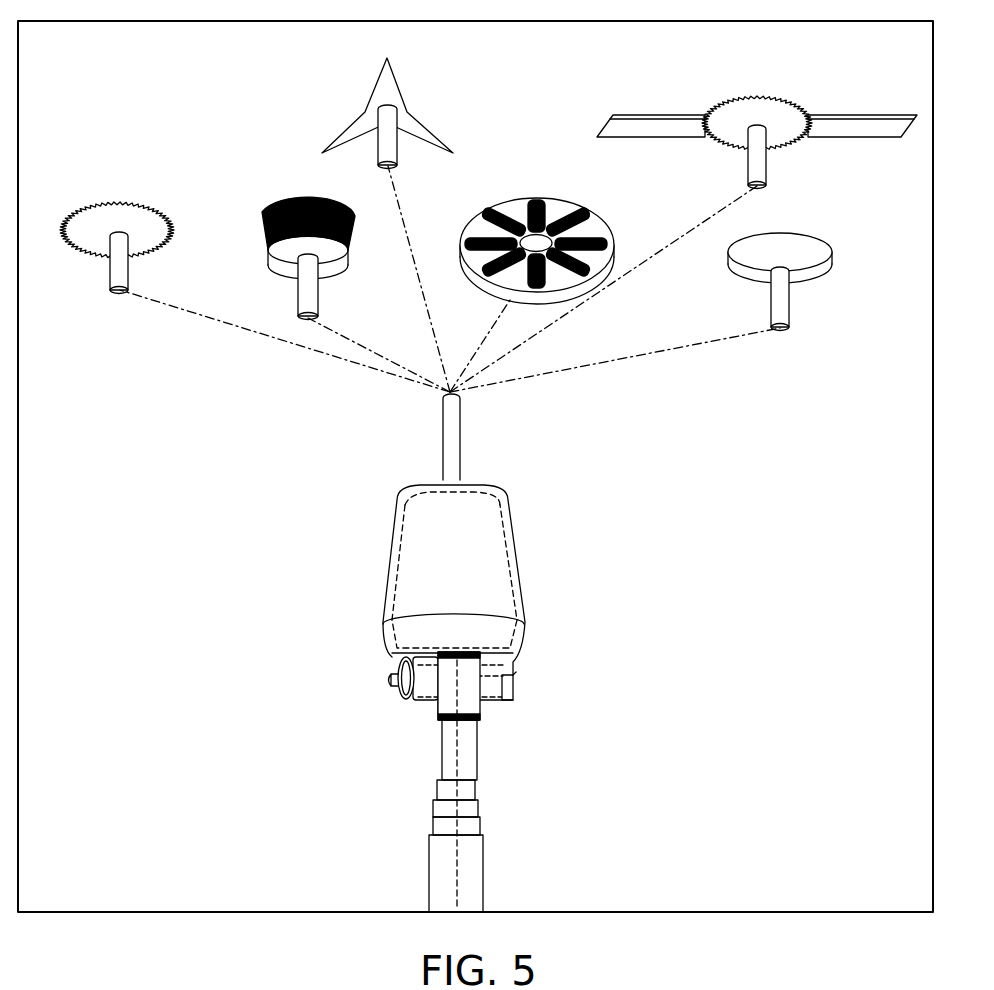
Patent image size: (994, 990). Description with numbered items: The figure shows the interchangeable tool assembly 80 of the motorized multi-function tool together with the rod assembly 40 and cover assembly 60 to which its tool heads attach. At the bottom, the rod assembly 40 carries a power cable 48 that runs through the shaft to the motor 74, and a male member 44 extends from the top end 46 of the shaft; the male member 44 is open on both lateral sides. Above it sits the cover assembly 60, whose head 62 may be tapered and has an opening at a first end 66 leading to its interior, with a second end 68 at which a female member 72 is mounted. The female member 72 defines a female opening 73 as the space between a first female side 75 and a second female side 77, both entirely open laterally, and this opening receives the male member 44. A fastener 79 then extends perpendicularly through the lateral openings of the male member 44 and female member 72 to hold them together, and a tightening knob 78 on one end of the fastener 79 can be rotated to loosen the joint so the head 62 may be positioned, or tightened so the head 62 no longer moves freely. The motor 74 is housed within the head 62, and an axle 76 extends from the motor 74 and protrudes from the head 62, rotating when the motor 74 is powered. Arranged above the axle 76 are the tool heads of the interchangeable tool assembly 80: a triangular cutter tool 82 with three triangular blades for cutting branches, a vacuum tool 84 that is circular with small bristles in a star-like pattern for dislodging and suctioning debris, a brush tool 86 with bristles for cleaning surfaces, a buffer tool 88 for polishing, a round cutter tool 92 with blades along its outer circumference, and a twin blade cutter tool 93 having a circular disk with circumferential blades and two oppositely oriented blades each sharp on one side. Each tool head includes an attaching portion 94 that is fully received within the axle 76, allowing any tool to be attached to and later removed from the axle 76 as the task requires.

The rod assembly 40 is at (445, 782).
The male member 44 is at (481, 712).
The top end 46 is at (441, 738).
The power cable 48 is at (460, 855).
The cover assembly 60 is at (437, 575).
The head 62 is at (398, 520).
The first end 66 is at (487, 484).
The second end 68 is at (427, 700).
The female member 72 is at (513, 690).
The female opening 73 is at (434, 650).
The motor 74 is at (487, 567).
The first female side 75 is at (440, 722).
The axle 76 is at (452, 432).
The second female side 77 is at (513, 700).
The tightening knob 78 is at (391, 680).
The fastener 79 is at (516, 673).
The interchangeable tool assembly 80 is at (363, 103).
The triangular cutter tool 82 is at (368, 102).
The vacuum tool 84 is at (530, 199).
The brush tool 86 is at (268, 212).
The buffer tool 88 is at (801, 245).
The round cutter tool 92 is at (120, 201).
The twin blade cutter tool 93 is at (831, 116).
The attaching portion 94 is at (120, 263).